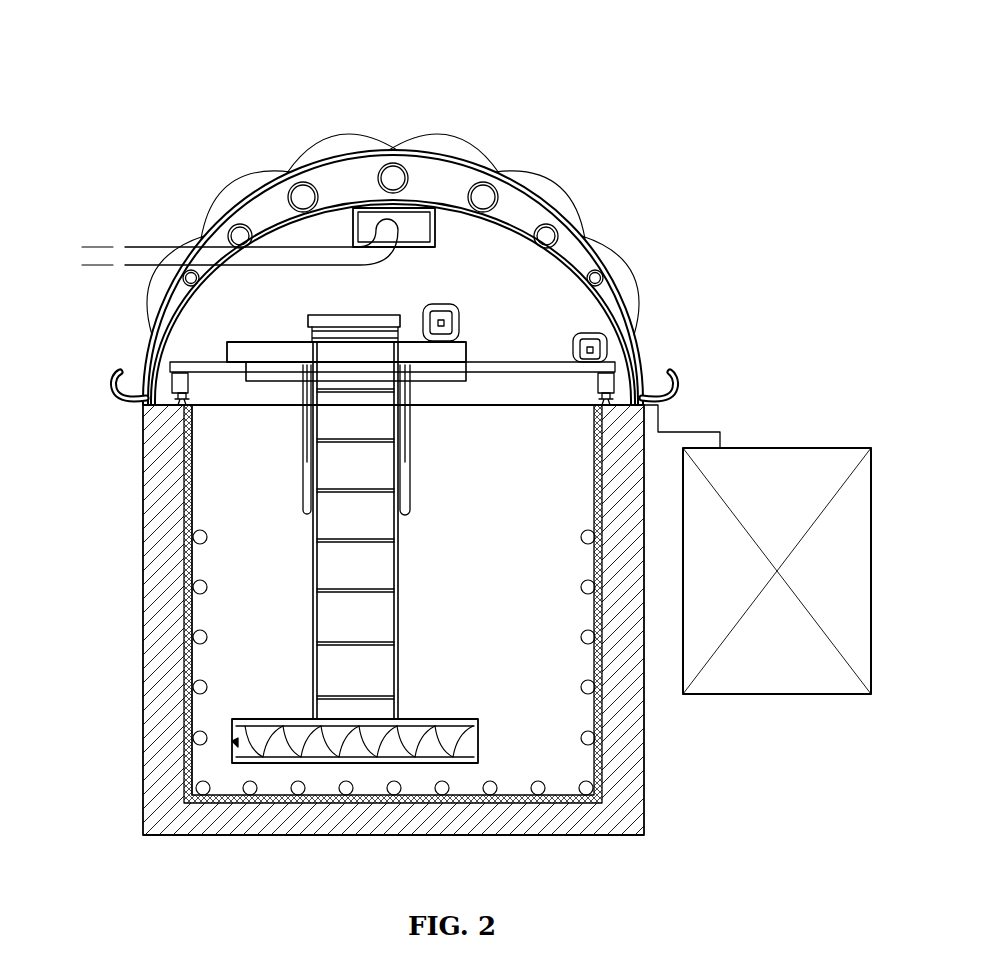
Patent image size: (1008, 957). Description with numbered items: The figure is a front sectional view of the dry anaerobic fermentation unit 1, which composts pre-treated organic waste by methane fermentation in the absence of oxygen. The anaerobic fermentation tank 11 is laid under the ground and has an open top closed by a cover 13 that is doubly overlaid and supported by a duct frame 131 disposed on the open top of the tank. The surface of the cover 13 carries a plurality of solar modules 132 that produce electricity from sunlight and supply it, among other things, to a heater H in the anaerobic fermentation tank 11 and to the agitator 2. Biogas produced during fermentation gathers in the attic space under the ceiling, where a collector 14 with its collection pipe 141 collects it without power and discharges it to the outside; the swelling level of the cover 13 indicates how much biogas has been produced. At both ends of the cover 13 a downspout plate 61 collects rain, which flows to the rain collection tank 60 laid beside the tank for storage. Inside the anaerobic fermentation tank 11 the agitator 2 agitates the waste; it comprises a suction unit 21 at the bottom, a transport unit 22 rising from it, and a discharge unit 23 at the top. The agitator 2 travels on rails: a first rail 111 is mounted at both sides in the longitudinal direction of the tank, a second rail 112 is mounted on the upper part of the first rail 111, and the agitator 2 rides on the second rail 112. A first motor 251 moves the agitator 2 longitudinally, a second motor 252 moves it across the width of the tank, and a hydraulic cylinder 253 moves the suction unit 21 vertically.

The dry anaerobic fermentation unit 1 is at (522, 85).
The anaerobic fermentation tank 11 is at (262, 572).
The first rail 111 is at (172, 396).
The second rail 112 is at (170, 368).
The cover 13 is at (603, 258).
The duct frame 131 is at (393, 162).
The solar module 132 is at (440, 152).
The collector 14 is at (338, 225).
The collection pipe 141 is at (158, 258).
The agitator 2 is at (397, 310).
The suction unit 21 is at (437, 698).
The transport unit 22 is at (385, 566).
The discharge unit 23 is at (270, 388).
The first motor 251 is at (597, 352).
The second motor 252 is at (448, 320).
The hydraulic cylinder 253 is at (405, 440).
The rain collection tank 60 is at (763, 694).
The downspout plate 61 is at (683, 388).
The heater H is at (200, 687).